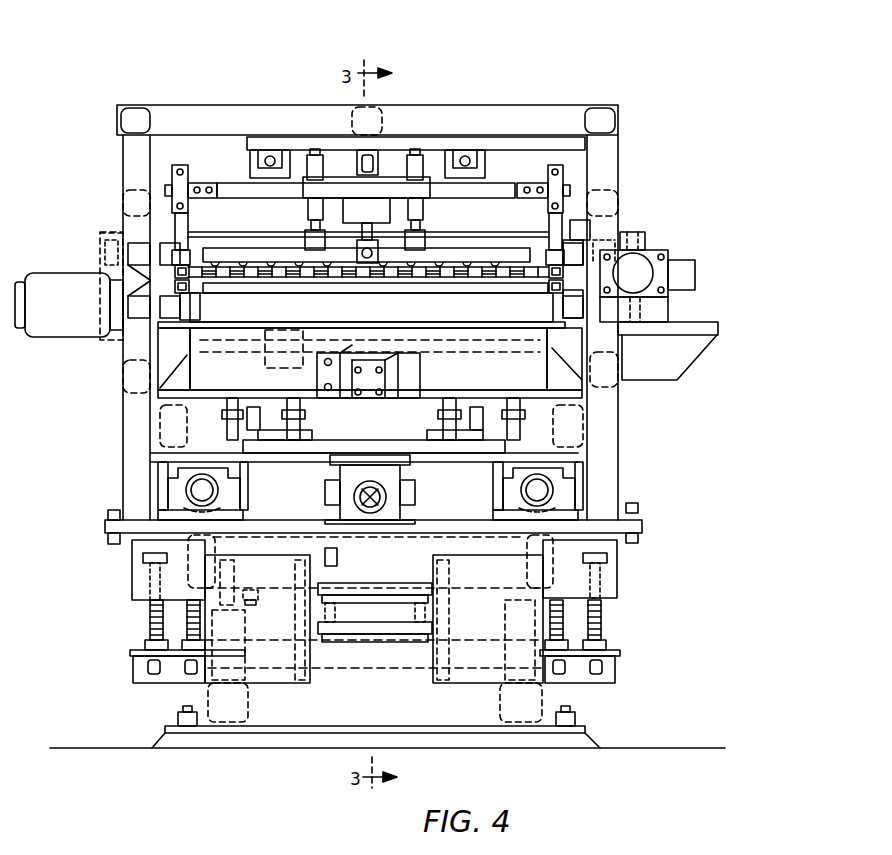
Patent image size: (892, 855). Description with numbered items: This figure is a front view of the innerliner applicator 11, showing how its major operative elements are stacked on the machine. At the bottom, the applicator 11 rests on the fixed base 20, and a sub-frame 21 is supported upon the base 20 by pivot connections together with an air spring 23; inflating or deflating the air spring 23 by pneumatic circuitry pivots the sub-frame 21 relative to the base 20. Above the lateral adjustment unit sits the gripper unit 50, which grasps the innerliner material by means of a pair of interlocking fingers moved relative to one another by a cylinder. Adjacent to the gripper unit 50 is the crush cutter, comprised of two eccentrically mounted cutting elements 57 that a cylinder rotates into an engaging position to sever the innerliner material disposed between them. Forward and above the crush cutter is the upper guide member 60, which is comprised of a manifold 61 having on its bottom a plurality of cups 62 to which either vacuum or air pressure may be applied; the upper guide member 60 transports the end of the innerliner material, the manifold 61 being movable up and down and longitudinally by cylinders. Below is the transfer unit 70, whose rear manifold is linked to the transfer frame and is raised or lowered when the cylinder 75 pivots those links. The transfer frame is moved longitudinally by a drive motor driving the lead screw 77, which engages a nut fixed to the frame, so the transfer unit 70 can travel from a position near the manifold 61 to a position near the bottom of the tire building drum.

The applicator 11 is at (502, 88).
The base 20 is at (528, 700).
The sub-frame 21 is at (573, 568).
The air spring 23 is at (387, 608).
The gripper unit 50 is at (540, 258).
The cutting elements 57 is at (197, 245).
The upper guide member 60 is at (487, 242).
The manifold 61 is at (455, 253).
The cups 62 is at (322, 275).
The transfer unit 70 is at (490, 308).
The cylinder 75 is at (366, 387).
The lead screw 77 is at (402, 493).